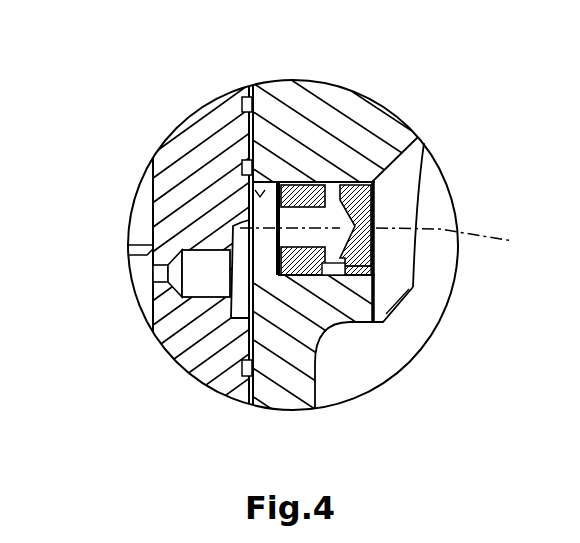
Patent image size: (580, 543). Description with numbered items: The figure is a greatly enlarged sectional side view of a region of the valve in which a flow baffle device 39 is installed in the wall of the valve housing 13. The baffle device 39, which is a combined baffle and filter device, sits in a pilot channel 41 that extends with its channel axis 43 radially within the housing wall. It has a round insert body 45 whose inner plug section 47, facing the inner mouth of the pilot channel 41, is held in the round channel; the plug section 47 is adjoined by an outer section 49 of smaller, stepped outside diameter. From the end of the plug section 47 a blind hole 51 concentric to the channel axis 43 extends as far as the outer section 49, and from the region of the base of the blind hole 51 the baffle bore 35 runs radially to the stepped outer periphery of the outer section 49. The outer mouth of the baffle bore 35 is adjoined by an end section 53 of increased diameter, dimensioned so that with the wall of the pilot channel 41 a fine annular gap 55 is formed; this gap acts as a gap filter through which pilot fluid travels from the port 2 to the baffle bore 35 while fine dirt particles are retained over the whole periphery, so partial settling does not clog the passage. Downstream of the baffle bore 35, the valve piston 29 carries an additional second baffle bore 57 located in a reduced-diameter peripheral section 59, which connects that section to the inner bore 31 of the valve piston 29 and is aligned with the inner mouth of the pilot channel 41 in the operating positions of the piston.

The port 2 is at (413, 289).
The valve housing 13 is at (378, 123).
The valve piston 29 is at (207, 132).
The inner bore 31 is at (153, 222).
The baffle bore 35 is at (327, 200).
The flow baffle device 39 is at (387, 207).
The pilot channel 41 is at (278, 183).
The channel axis 43 is at (393, 242).
The insert body 45 is at (310, 276).
The inner plug section 47 is at (246, 378).
The outer section 49 is at (374, 182).
The blind hole 51 is at (230, 255).
The end section 53 is at (340, 279).
The annular gap 55 is at (378, 257).
The second baffle bore 57 is at (312, 232).
The peripheral section 59 is at (233, 224).